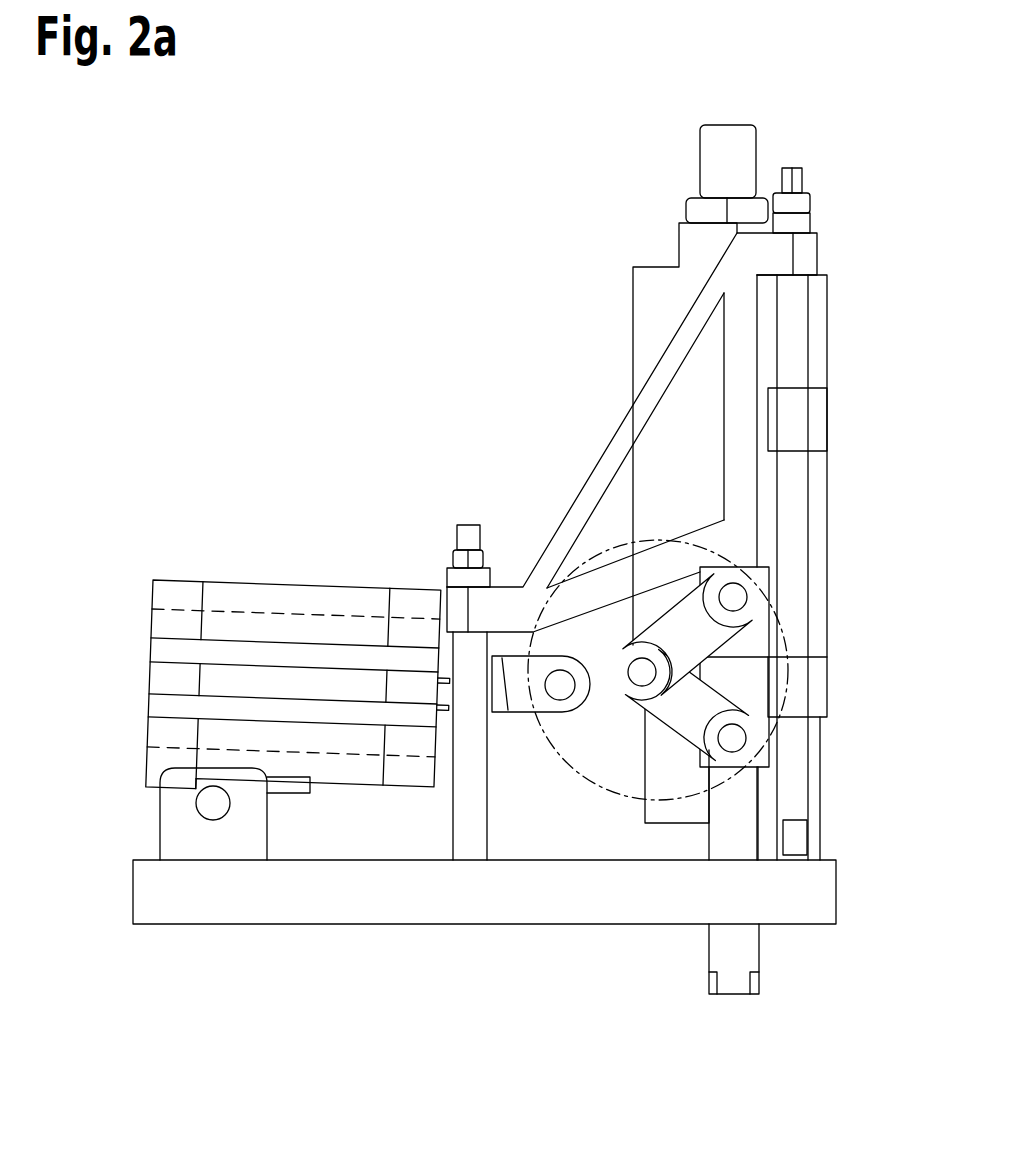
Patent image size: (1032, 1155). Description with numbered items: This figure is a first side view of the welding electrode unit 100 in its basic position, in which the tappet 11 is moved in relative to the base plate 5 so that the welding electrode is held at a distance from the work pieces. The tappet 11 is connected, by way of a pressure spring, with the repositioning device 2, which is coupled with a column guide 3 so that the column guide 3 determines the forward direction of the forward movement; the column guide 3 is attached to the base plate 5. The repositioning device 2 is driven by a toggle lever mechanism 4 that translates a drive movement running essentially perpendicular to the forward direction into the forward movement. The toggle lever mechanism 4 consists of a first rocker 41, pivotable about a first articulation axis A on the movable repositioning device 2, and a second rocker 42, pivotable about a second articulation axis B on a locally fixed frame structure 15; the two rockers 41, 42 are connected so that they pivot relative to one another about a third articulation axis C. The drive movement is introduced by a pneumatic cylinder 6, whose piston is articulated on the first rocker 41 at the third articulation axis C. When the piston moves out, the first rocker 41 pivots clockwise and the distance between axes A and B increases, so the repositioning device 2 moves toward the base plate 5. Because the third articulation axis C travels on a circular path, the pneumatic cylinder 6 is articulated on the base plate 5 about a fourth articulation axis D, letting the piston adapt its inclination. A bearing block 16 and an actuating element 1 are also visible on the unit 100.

The welding electrode unit 100 is at (170, 390).
The actuating element 1 is at (722, 160).
The repositioning device 2 is at (648, 305).
The column guide 3 is at (785, 338).
The toggle lever mechanism 4 is at (592, 554).
The base plate 5 is at (785, 901).
The pneumatic cylinder 6 is at (232, 640).
The tappet 11 is at (740, 968).
The frame structure 15 is at (730, 273).
The pivot bearing 16 is at (212, 803).
The first rocker 41 is at (703, 708).
The second rocker 42 is at (690, 630).
The first articulation axis A is at (733, 738).
The second articulation axis B is at (735, 597).
The third articulation axis C is at (640, 680).
The fourth articulation axis D is at (560, 690).